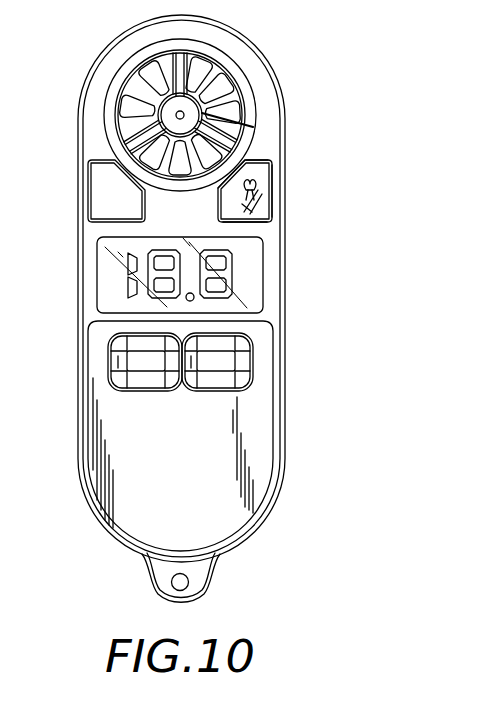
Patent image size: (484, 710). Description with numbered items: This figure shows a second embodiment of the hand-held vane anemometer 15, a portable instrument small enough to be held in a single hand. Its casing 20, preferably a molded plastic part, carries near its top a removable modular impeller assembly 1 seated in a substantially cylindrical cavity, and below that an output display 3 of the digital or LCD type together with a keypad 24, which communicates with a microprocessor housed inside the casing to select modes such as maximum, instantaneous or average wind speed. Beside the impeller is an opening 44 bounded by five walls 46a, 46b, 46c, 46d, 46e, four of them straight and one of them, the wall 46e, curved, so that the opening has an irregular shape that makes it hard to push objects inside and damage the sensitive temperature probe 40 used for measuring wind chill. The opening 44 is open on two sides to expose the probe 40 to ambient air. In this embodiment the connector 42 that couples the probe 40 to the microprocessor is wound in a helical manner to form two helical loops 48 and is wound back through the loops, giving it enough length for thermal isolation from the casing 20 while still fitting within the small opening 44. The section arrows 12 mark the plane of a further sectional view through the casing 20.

The modular impeller assembly 1 is at (210, 90).
The casing 20 is at (270, 62).
The vane anemometer 15 is at (254, 553).
The curved wall 46e is at (240, 110).
The section line 12- 12 is at (242, 123).
The wall 46a is at (212, 204).
The opening 44 is at (263, 173).
The wall 46d is at (268, 156).
The wall 46c is at (272, 181).
The wall 46b is at (250, 228).
The helical loops 48 is at (228, 209).
The connector 42 is at (262, 192).
The temperature probe 40 is at (252, 210).
The output display 3 is at (264, 299).
The keypad 24 is at (254, 372).